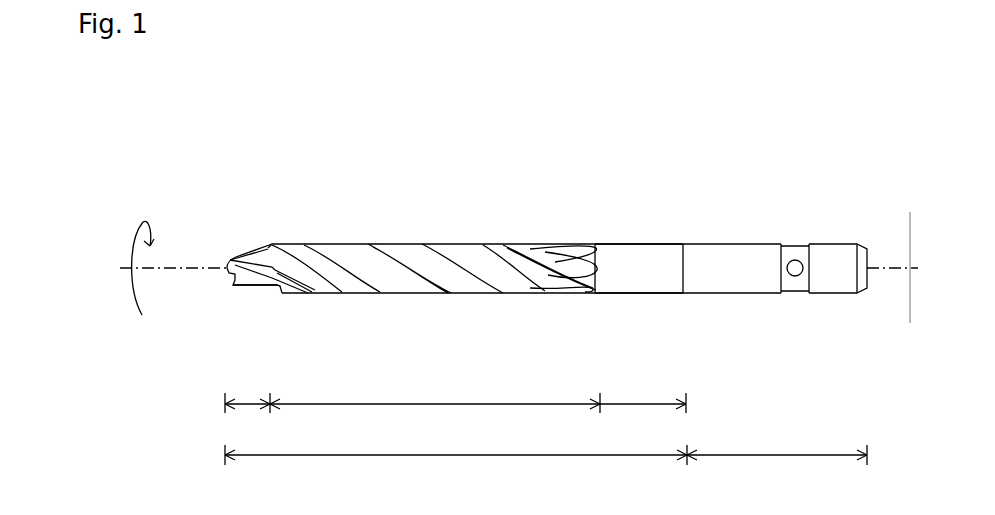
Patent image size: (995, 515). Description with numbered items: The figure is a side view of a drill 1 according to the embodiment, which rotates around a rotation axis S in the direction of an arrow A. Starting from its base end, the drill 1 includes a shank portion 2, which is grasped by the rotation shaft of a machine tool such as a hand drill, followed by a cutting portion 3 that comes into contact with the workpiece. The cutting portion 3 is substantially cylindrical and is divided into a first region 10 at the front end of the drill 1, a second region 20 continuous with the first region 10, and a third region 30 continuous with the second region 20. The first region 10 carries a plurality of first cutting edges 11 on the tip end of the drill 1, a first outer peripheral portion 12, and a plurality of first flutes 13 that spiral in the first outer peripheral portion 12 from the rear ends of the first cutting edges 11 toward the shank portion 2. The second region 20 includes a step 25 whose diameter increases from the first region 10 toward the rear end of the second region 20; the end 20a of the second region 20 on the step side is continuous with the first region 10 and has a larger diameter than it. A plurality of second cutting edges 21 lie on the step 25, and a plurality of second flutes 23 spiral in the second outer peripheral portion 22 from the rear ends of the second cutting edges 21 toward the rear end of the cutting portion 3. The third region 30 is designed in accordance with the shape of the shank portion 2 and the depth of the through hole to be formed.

The drill 1 is at (868, 243).
The shank portion 2 is at (775, 365).
The cutting portion 3 is at (410, 276).
The first region 10 is at (224, 273).
The first cutting edges 11 is at (232, 247).
The first outer peripheral portion 12 is at (250, 246).
The first flutes 13 is at (238, 288).
The second region 20 is at (456, 251).
The end of the second region 20a is at (268, 246).
The second cutting edges 21 is at (266, 293).
The second outer peripheral portion 22 is at (420, 262).
The second flutes 23 is at (497, 262).
The step 25 is at (270, 244).
The third region 30 is at (640, 340).
The rotation axis S is at (188, 252).
The arrow A is at (151, 268).